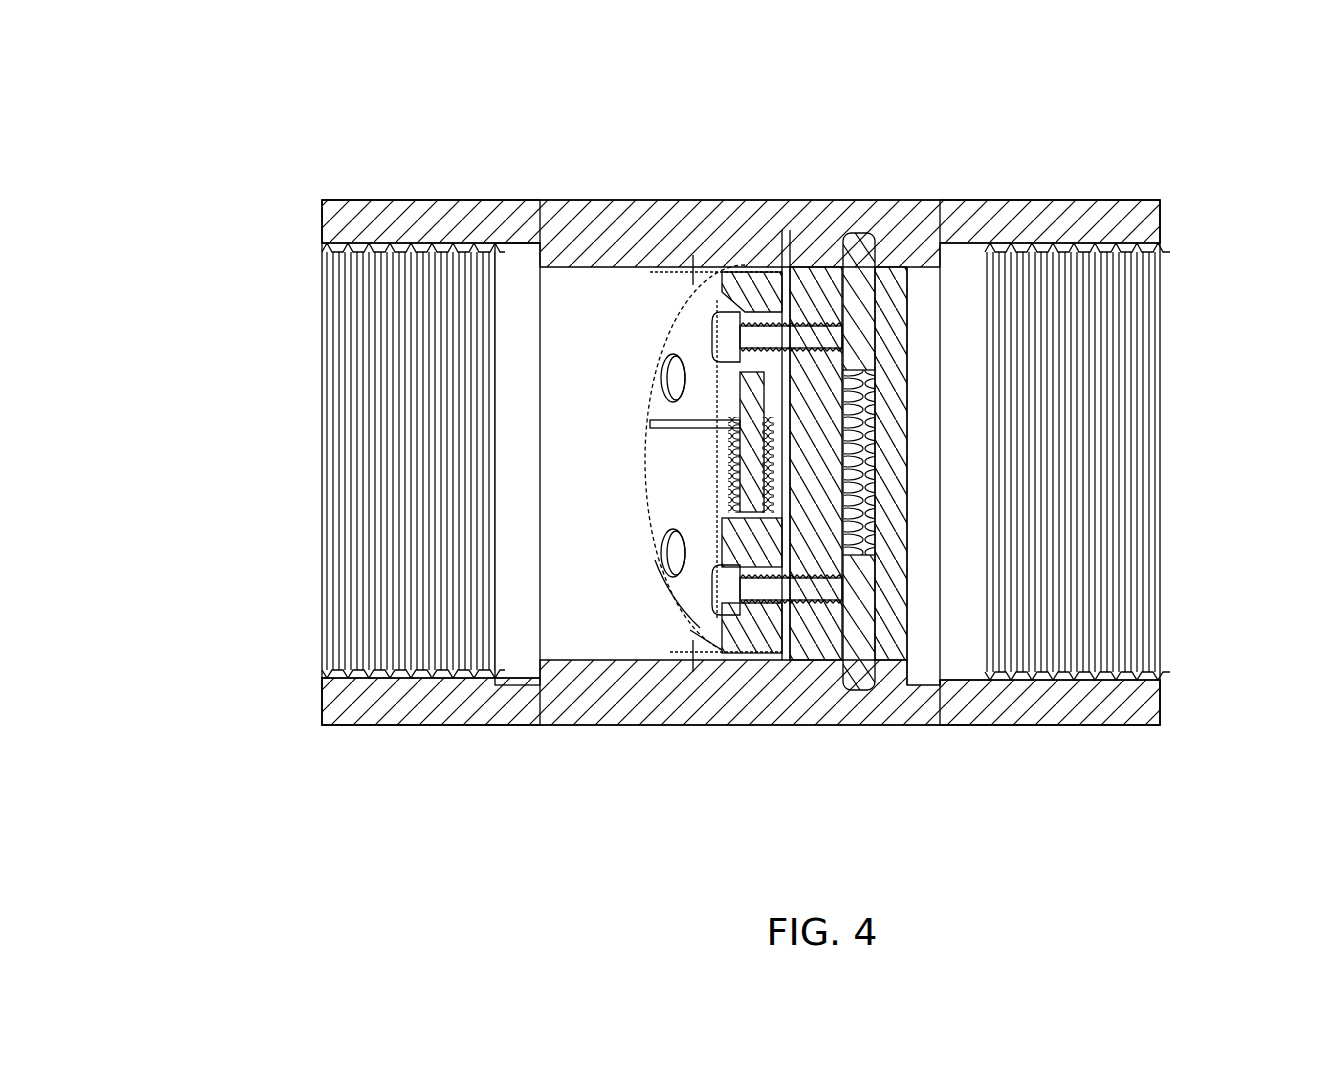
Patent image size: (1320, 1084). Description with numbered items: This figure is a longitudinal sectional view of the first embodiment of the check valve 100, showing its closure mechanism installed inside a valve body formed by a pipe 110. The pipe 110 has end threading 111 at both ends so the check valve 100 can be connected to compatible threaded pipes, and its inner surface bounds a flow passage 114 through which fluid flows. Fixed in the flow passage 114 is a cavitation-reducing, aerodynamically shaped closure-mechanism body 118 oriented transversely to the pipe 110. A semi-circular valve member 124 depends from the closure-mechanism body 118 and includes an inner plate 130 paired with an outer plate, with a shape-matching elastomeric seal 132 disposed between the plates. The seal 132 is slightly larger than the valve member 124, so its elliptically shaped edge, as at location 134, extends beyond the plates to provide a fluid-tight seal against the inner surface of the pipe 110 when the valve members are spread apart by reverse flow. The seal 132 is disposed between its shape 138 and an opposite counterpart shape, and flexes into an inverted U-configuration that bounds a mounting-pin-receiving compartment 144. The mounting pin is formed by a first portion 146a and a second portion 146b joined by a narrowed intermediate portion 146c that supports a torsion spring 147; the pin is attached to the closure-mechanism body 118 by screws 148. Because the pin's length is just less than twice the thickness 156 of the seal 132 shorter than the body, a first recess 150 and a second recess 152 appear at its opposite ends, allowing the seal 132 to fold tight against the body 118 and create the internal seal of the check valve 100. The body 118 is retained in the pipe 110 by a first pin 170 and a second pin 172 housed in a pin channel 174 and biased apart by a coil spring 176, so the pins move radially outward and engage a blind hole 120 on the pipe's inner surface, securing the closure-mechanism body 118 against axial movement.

The check valve 100 is at (205, 90).
The pipe 110 is at (400, 222).
The end threading 111 is at (355, 325).
The flow passage 114 is at (360, 446).
The closure-mechanism body 118 is at (848, 240).
The blind hole 120 is at (960, 295).
The valve member 124 is at (612, 552).
The inner plate 130 is at (662, 409).
The seal 132 is at (720, 648).
The edge of the seal 134 is at (677, 607).
The seal shape 138 is at (690, 333).
The mounting-pin-receiving compartment 144 is at (800, 482).
The first portion of the mounting pin 146a is at (745, 268).
The second portion of the mounting pin 146b is at (750, 630).
The narrowed intermediate portion 146c is at (745, 470).
The torsion spring 147 is at (735, 455).
The screws 148 is at (714, 312).
The first recess 150 is at (650, 272).
The second recess 152 is at (668, 665).
The thickness 156 is at (790, 265).
The first pin 170 is at (890, 290).
The second pin 172 is at (900, 660).
The pin channel 174 is at (895, 267).
The coil spring 176 is at (875, 398).